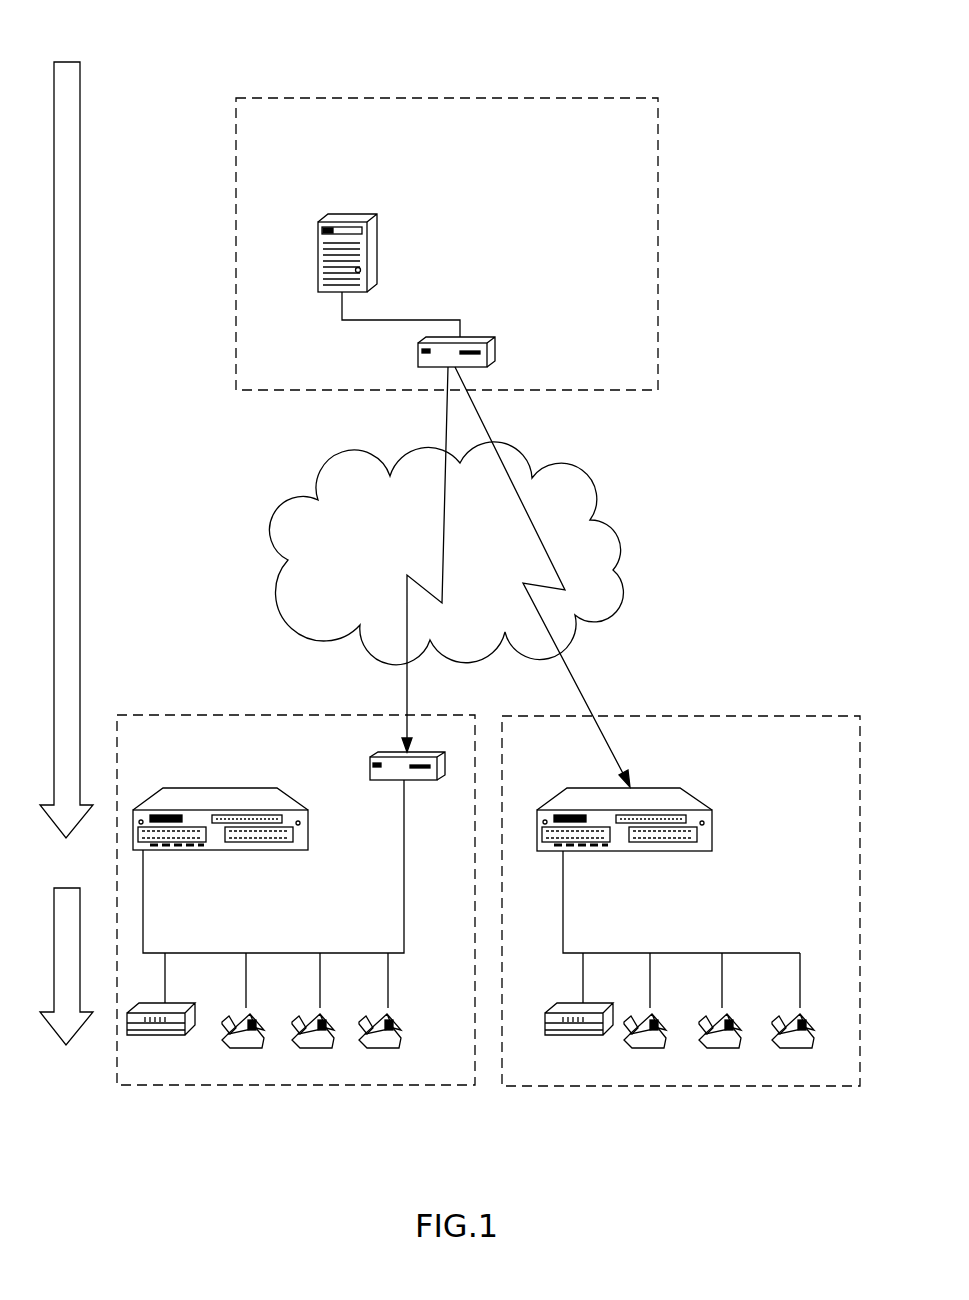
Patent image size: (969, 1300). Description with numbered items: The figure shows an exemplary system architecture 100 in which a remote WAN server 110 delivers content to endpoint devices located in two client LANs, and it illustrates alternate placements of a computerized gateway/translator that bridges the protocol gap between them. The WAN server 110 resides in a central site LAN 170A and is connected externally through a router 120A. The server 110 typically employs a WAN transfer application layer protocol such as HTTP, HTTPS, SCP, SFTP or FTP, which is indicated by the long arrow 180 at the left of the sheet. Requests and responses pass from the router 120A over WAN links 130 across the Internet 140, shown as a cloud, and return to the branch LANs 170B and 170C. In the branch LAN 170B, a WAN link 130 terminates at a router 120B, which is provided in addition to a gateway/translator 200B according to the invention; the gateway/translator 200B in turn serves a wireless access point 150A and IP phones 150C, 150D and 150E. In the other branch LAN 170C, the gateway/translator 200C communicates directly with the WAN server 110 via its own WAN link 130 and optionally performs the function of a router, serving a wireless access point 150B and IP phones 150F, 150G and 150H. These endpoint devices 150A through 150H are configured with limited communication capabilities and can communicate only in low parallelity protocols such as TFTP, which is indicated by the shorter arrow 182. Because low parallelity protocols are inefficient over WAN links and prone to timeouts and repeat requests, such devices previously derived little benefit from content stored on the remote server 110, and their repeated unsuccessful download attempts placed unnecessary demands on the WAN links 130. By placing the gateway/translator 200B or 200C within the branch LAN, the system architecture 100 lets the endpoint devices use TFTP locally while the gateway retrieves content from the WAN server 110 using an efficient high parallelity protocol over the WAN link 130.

The system architecture 100 is at (182, 42).
The WAN server 110 is at (345, 222).
The router 120A is at (480, 338).
The router 120B is at (417, 781).
The WAN link 130 is at (407, 665).
The Internet 140 is at (585, 512).
The wireless access point 150A is at (200, 987).
The wireless access point 150B is at (618, 987).
The IP phone 150C is at (282, 990).
The IP phone 150D is at (352, 990).
The IP phone 150E is at (419, 990).
The IP phone 150F is at (685, 990).
The IP phone 150G is at (759, 990).
The IP phone 150H is at (832, 990).
The LAN 170A is at (580, 98).
The client LAN 170B is at (297, 715).
The client LAN 170C is at (783, 716).
The WAN transfer application layer protocol 180 is at (80, 458).
The low parallelity protocol 182 is at (80, 995).
The gateway/translator 200B is at (207, 788).
The gateway/translator 200C is at (657, 788).